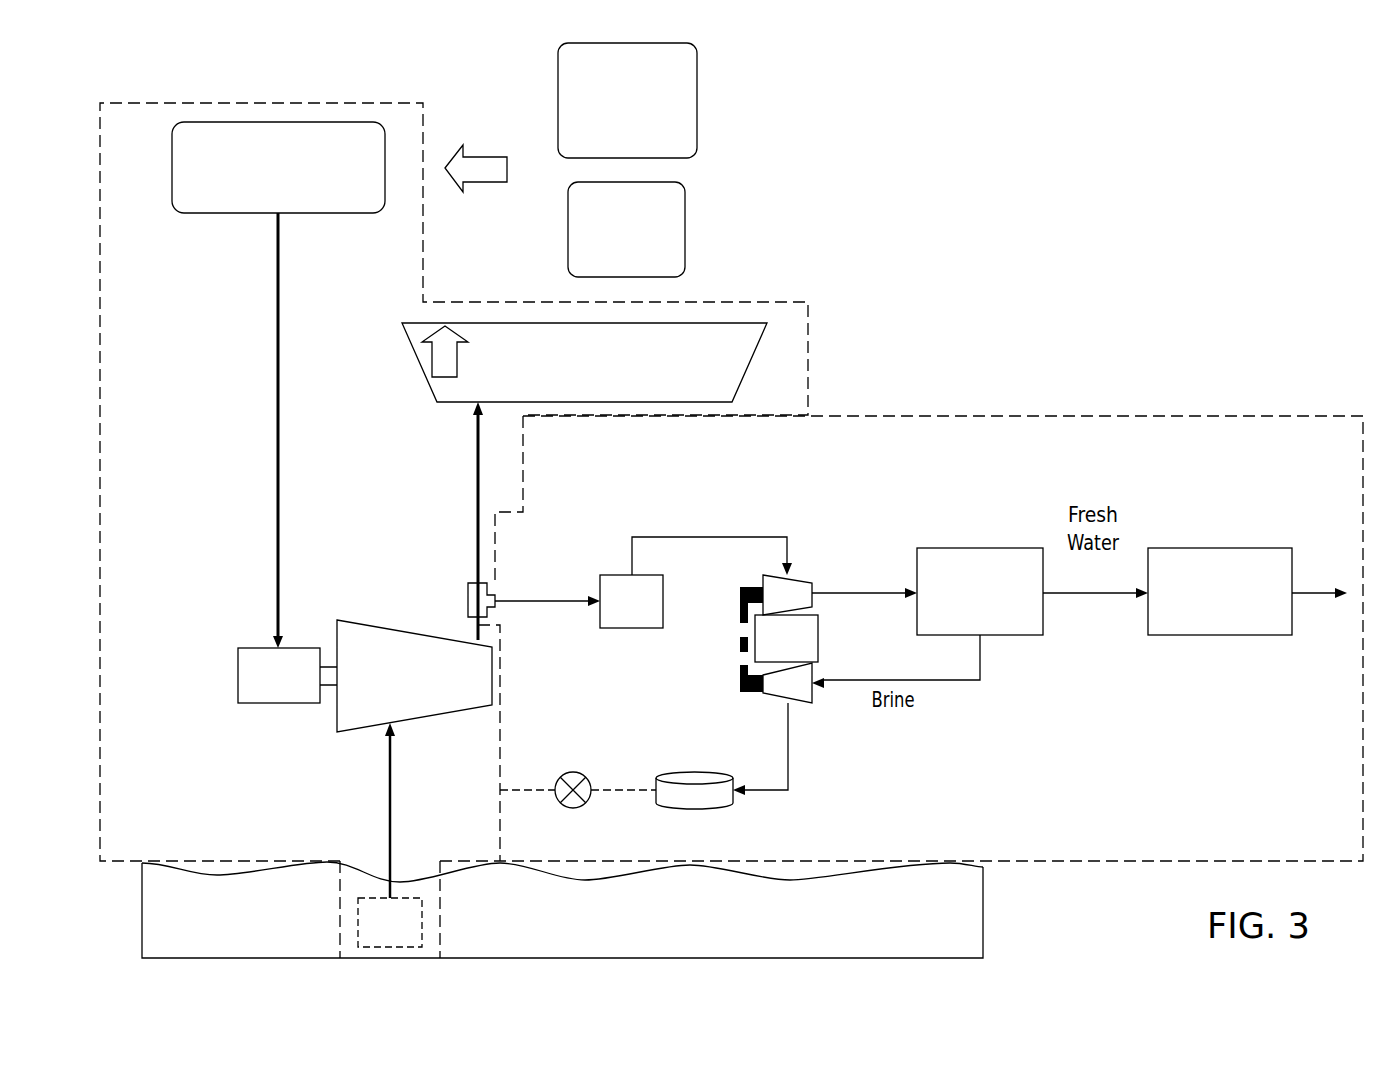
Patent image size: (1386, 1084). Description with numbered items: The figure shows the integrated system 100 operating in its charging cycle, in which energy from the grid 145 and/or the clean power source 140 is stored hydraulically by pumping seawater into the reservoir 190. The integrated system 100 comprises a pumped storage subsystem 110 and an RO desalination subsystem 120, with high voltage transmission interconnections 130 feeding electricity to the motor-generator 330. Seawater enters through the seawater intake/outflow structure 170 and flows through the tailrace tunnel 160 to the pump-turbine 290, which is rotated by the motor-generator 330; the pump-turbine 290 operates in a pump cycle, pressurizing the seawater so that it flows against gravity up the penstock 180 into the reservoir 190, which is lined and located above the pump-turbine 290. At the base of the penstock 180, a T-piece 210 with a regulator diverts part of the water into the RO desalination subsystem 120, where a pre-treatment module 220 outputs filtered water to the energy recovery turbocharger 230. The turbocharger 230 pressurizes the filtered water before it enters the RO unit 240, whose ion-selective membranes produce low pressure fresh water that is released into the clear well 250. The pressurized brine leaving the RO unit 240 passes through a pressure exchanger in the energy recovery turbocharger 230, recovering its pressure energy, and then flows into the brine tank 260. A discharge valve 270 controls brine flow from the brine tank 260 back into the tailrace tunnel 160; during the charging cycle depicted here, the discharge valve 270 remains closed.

The integrated system 100 is at (1186, 128).
The pumped storage subsystem 110 is at (112, 293).
The RO desalination subsystem 120 is at (1035, 416).
The high voltage transmission interconnections 130 is at (278, 385).
The clean power source 140 is at (611, 265).
The grid 145 is at (611, 142).
The tailrace tunnel 160 is at (389, 781).
The seawater intake/outflow structure 170 is at (374, 937).
The penstock 180 is at (477, 508).
The reservoir 190 is at (600, 388).
The T-piece 210 is at (547, 598).
The pre-treatment module 220 is at (616, 617).
The energy recovery turbocharger 230 is at (771, 650).
The RO unit 240 is at (996, 618).
The clear well 250 is at (1202, 618).
The brine tank 260 is at (697, 826).
The discharge valve 270 is at (570, 828).
The pump-turbine 290 is at (394, 702).
The motor-generator 330 is at (259, 688).